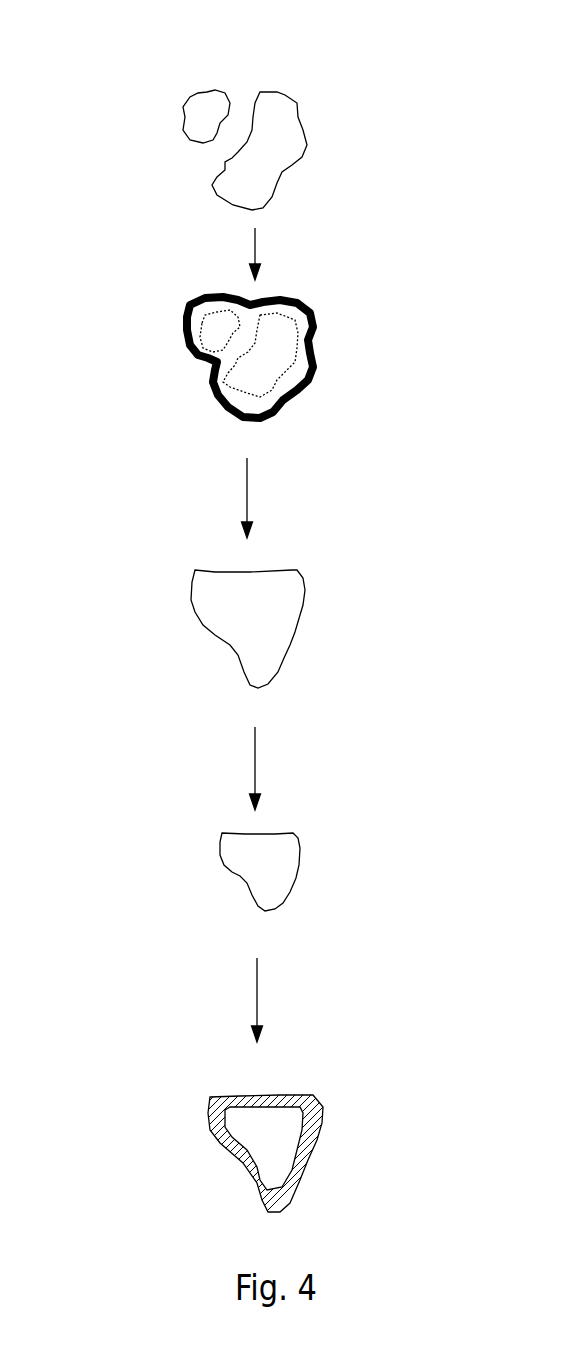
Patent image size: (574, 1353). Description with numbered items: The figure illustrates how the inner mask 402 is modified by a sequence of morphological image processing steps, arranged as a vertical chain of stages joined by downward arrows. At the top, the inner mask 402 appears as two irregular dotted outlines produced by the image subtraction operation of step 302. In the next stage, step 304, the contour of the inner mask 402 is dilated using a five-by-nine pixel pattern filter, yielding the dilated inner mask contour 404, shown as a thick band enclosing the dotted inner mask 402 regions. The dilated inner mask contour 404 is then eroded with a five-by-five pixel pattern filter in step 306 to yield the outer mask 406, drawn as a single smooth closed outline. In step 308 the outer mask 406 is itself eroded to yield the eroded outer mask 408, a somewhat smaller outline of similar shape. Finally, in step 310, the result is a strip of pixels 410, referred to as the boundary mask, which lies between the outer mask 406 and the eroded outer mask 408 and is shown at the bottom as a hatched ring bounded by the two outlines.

The image subtraction step 302 is at (167, 42).
The inner mask 402 is at (215, 90).
The dilation step 304 is at (180, 266).
The dilated inner mask contour 404 is at (305, 303).
The erosion step 306 is at (183, 520).
The outer mask 406 is at (290, 568).
The outer mask erosion step 308 is at (182, 779).
The eroded outer mask 408 is at (292, 830).
The boundary mask step 310 is at (183, 1067).
The strip of pixels 410 is at (317, 1100).